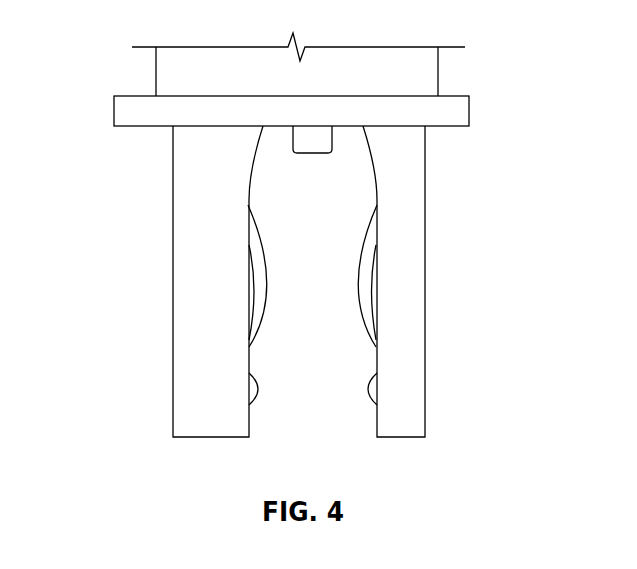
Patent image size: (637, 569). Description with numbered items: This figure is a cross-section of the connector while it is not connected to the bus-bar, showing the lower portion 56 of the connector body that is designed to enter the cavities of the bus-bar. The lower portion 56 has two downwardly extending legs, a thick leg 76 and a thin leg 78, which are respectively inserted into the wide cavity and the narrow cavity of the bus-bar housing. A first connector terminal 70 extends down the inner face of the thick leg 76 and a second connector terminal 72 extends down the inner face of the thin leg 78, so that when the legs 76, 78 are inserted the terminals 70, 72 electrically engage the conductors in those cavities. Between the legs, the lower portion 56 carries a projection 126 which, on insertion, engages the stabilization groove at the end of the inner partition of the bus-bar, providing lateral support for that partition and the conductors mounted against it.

The lower portion 56 is at (133, 204).
The first connector terminal 70 is at (359, 268).
The second connector terminal 72 is at (248, 247).
The thick leg 76 is at (215, 422).
The thin leg 78 is at (403, 420).
The projection 126 is at (312, 145).